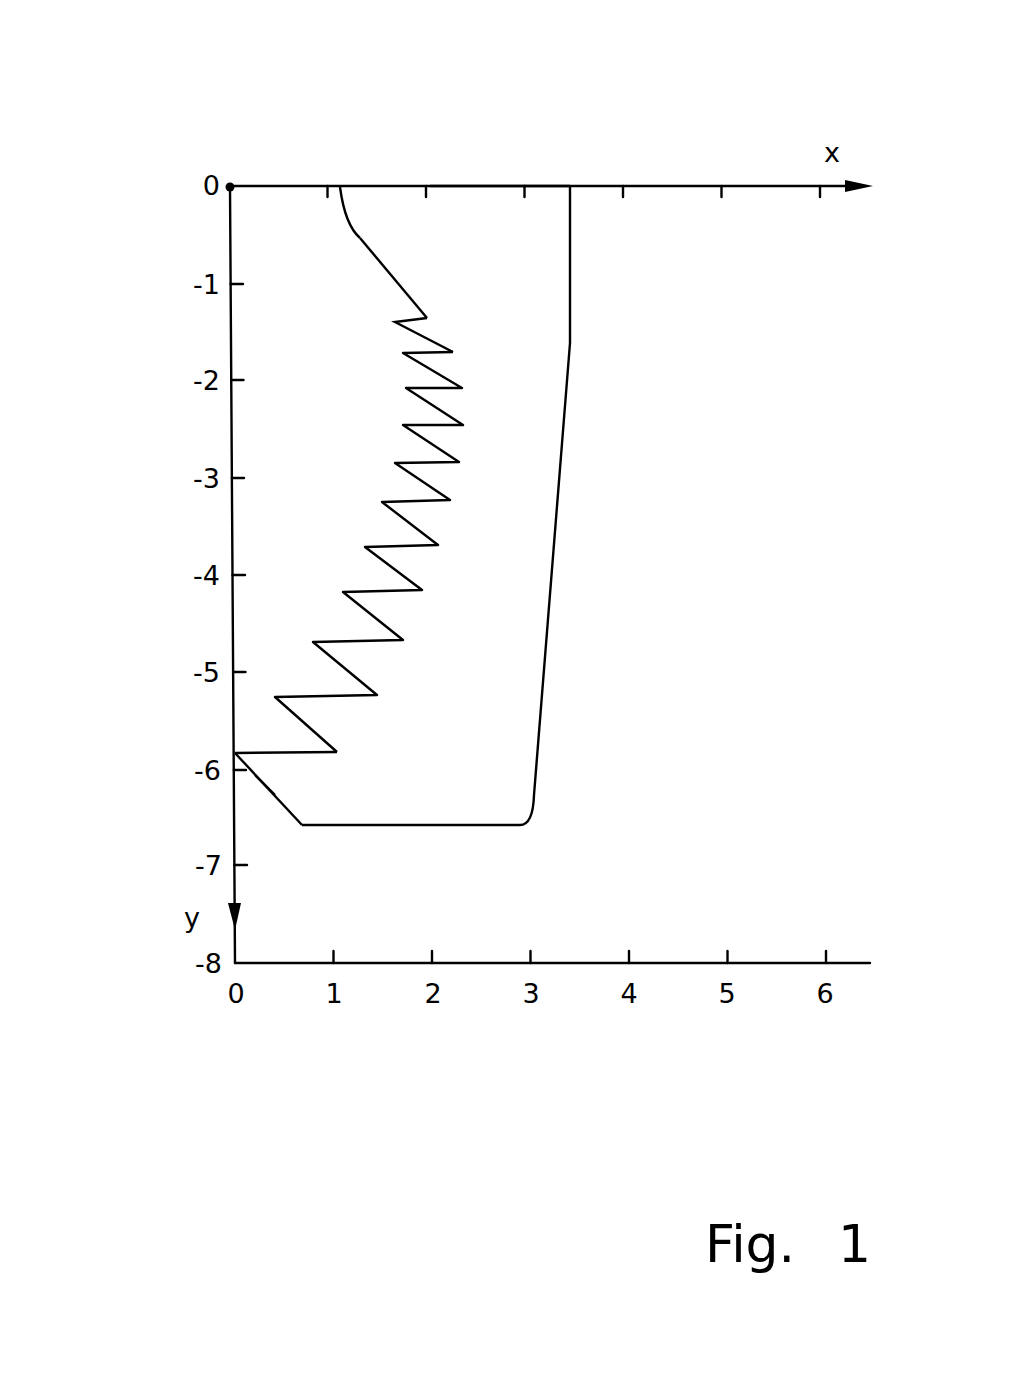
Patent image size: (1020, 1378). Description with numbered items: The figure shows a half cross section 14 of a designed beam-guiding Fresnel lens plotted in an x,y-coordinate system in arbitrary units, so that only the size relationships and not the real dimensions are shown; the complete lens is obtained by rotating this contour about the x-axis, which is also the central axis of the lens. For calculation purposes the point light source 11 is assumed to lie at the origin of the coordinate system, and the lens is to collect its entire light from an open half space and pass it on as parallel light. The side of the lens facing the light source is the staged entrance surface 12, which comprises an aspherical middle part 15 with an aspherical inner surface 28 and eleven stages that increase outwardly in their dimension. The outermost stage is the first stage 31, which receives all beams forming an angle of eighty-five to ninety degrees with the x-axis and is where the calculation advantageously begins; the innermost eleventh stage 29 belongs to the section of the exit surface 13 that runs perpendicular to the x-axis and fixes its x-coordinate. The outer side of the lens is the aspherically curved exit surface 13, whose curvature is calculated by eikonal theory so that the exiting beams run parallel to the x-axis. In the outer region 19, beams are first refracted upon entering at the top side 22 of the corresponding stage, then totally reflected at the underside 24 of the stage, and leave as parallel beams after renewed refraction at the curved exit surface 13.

The point light source 11 is at (230, 187).
The entrance surface 12 is at (352, 497).
The exit surface 13 is at (570, 343).
The half cross section 14 is at (566, 146).
The aspherical middle part 15 is at (478, 228).
The outer region 19 is at (478, 585).
The top side 22 is at (268, 750).
The underside 24 is at (277, 800).
The aspherical inner surface 28 is at (355, 237).
The eleventh stage 29 is at (413, 323).
The first stage 31 is at (275, 772).